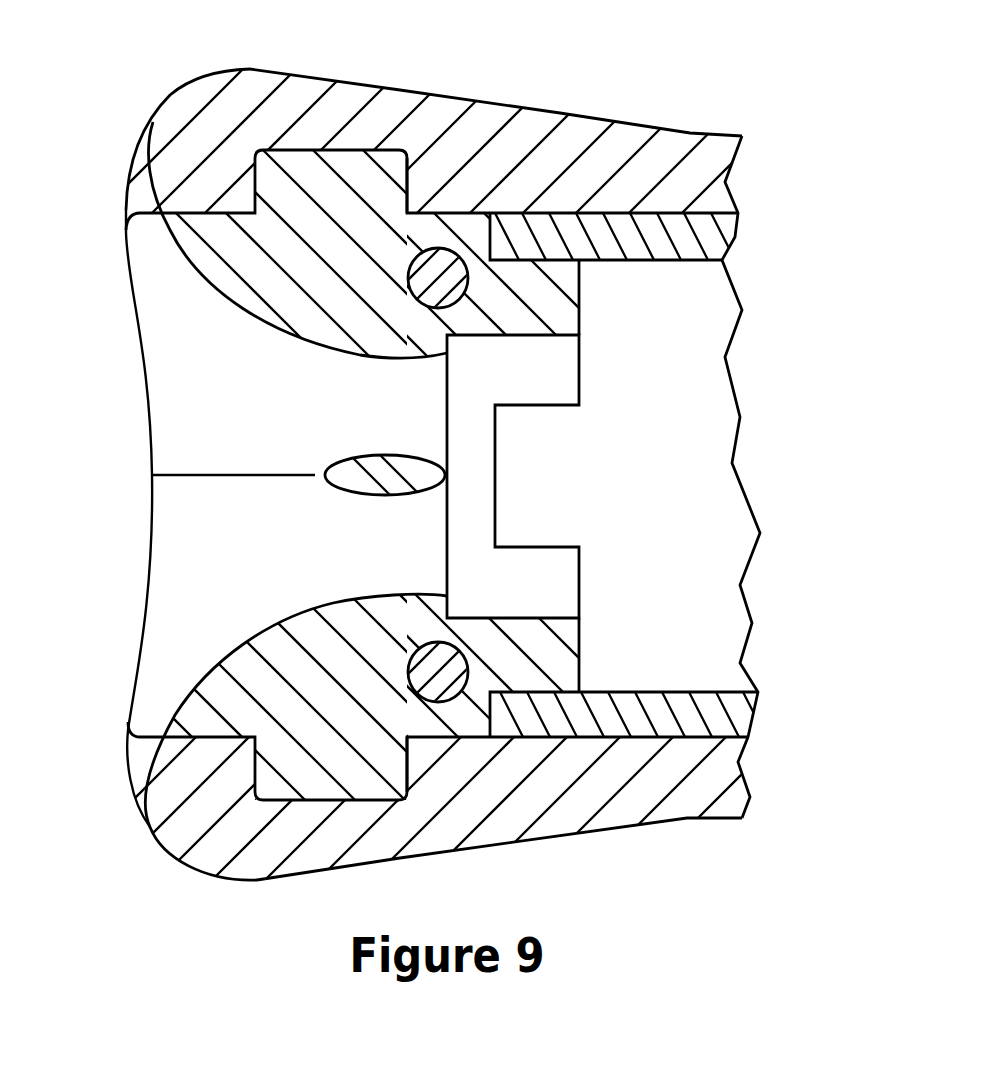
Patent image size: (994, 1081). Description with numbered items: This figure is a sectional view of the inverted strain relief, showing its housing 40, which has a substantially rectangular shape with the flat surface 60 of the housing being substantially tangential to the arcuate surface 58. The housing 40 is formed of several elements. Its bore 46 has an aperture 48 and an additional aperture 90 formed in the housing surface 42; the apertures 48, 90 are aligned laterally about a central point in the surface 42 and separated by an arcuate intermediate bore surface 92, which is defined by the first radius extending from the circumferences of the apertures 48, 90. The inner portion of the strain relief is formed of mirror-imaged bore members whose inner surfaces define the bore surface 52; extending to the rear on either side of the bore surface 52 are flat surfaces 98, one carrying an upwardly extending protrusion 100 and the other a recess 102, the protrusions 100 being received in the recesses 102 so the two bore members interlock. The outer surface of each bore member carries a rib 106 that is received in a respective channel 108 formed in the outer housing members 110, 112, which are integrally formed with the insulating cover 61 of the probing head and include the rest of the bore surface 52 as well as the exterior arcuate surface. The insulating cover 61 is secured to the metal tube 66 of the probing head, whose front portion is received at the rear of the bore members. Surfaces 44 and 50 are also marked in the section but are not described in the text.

The housing 40 is at (297, 878).
The housing surface 42 is at (580, 316).
The front face 44 is at (128, 776).
The bore 46 is at (186, 421).
The aperture 48 is at (395, 405).
The outer face 50 is at (150, 183).
The bore surface 52 is at (260, 338).
The arcuate surface 58 is at (148, 82).
The flat surface 60 is at (498, 106).
The insulating cover 61 is at (718, 198).
The metal tube 66 is at (718, 246).
The additional aperture 90 is at (395, 548).
The arcuate intermediate bore surface 92 is at (358, 488).
The flat surface 98 is at (567, 668).
The protrusion 100 is at (456, 300).
The recess 102 is at (456, 644).
The rib 106 is at (373, 188).
The channel 108 is at (297, 147).
The outer housing member 110 is at (584, 135).
The outer housing member 112 is at (556, 824).